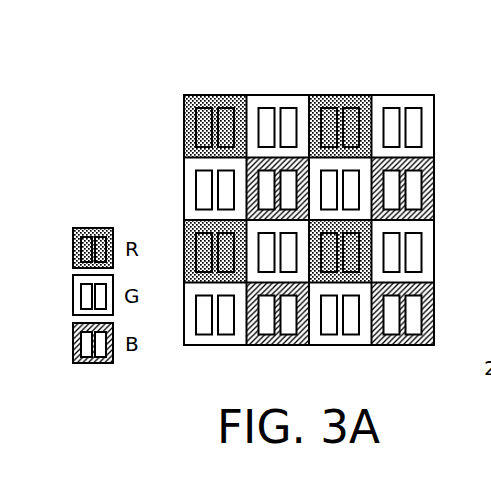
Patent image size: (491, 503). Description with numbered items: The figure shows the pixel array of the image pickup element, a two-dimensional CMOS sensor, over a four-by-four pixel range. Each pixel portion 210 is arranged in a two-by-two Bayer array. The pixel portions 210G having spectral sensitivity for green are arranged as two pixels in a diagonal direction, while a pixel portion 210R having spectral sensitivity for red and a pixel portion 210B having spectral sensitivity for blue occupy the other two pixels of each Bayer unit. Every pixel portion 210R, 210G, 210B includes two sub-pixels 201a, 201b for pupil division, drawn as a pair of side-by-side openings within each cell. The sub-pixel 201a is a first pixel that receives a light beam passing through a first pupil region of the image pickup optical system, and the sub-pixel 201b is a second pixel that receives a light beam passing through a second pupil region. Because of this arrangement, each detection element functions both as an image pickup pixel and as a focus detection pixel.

The pixel portion 210 is at (230, 197).
The pixel portion having spectral sensitivity for R 210R is at (184, 121).
The pixel portion having spectral sensitivity for G 210G is at (184, 163).
The pixel portion having spectral sensitivity for B 210B is at (247, 200).
The sub-pixel 201a is at (264, 108).
The sub-pixel 201b is at (287, 108).